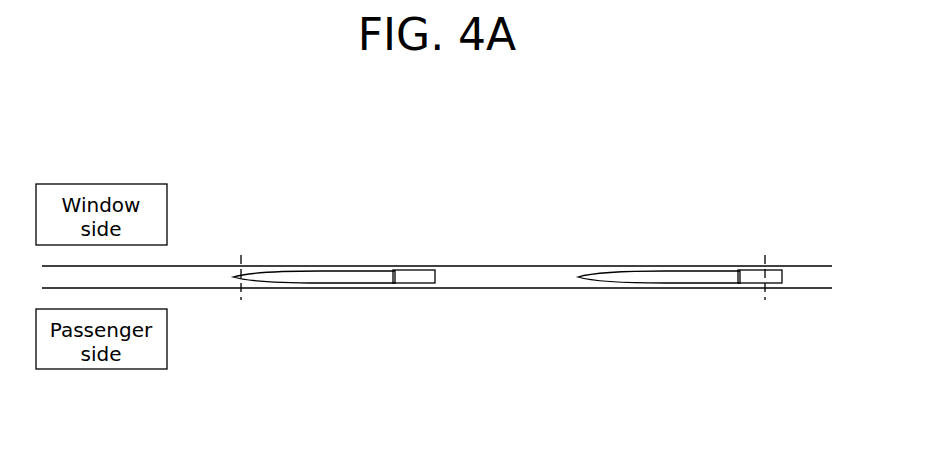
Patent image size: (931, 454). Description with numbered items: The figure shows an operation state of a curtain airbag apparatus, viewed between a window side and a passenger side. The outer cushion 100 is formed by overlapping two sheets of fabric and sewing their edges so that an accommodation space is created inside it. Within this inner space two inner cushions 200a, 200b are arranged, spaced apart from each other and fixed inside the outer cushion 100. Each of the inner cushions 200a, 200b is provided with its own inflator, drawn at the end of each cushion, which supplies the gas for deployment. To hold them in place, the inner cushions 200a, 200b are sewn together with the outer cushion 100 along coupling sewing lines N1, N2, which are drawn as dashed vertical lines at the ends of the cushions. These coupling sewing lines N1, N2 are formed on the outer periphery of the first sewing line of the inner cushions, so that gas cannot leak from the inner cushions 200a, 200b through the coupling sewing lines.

The outer cushion 100 is at (520, 288).
The inner cushion 200a is at (322, 283).
The inner cushion 200b is at (635, 283).
The coupling sewing line N1 is at (240, 300).
The coupling sewing line N2 is at (765, 298).